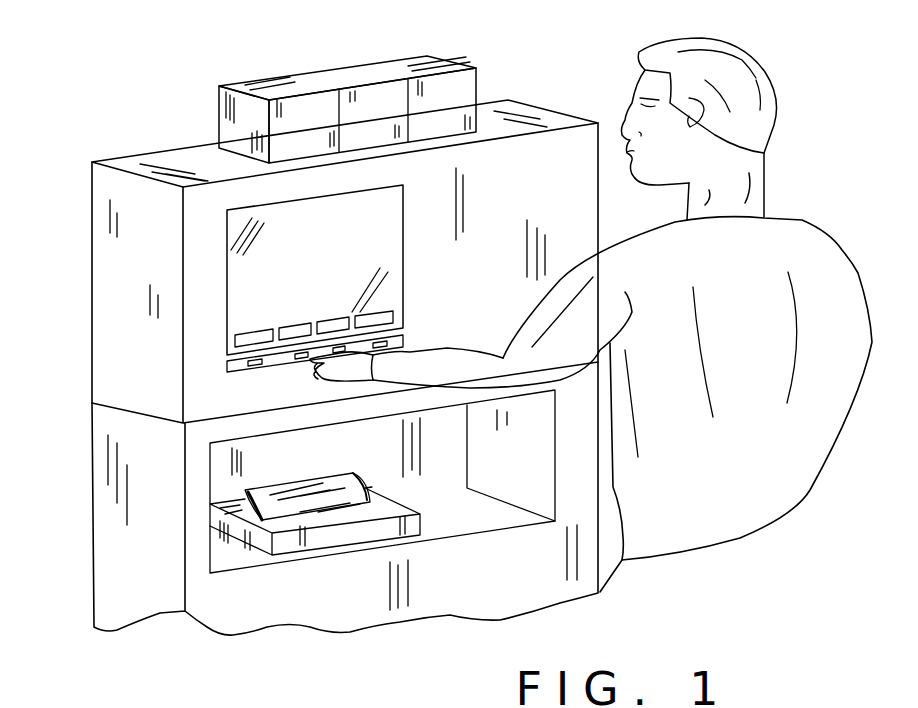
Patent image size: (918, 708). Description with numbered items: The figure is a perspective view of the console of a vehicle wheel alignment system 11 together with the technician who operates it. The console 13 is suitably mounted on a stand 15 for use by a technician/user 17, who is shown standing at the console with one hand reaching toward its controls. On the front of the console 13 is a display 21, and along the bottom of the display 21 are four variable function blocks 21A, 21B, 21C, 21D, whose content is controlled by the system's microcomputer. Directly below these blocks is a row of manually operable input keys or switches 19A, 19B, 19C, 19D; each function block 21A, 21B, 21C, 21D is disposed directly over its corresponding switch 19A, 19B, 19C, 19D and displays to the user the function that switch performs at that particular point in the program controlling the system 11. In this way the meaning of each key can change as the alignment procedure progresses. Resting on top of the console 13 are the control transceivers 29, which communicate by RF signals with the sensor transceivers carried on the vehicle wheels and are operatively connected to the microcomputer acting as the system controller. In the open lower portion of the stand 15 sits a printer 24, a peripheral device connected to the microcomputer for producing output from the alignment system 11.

The vehicle wheel alignment system 11 is at (120, 112).
The console 13 is at (548, 95).
The stand 15 is at (78, 498).
The technician/user 17 is at (755, 62).
The input key 19A is at (237, 373).
The input key 19B is at (295, 367).
The input key 19C is at (337, 350).
The input key 19D is at (380, 343).
The display 21 is at (295, 233).
The variable function block 21A is at (252, 345).
The variable function block 21B is at (297, 327).
The variable function block 21C is at (334, 322).
The variable function block 21D is at (373, 318).
The printer 24 is at (332, 538).
The control transceiver 29 is at (287, 134).